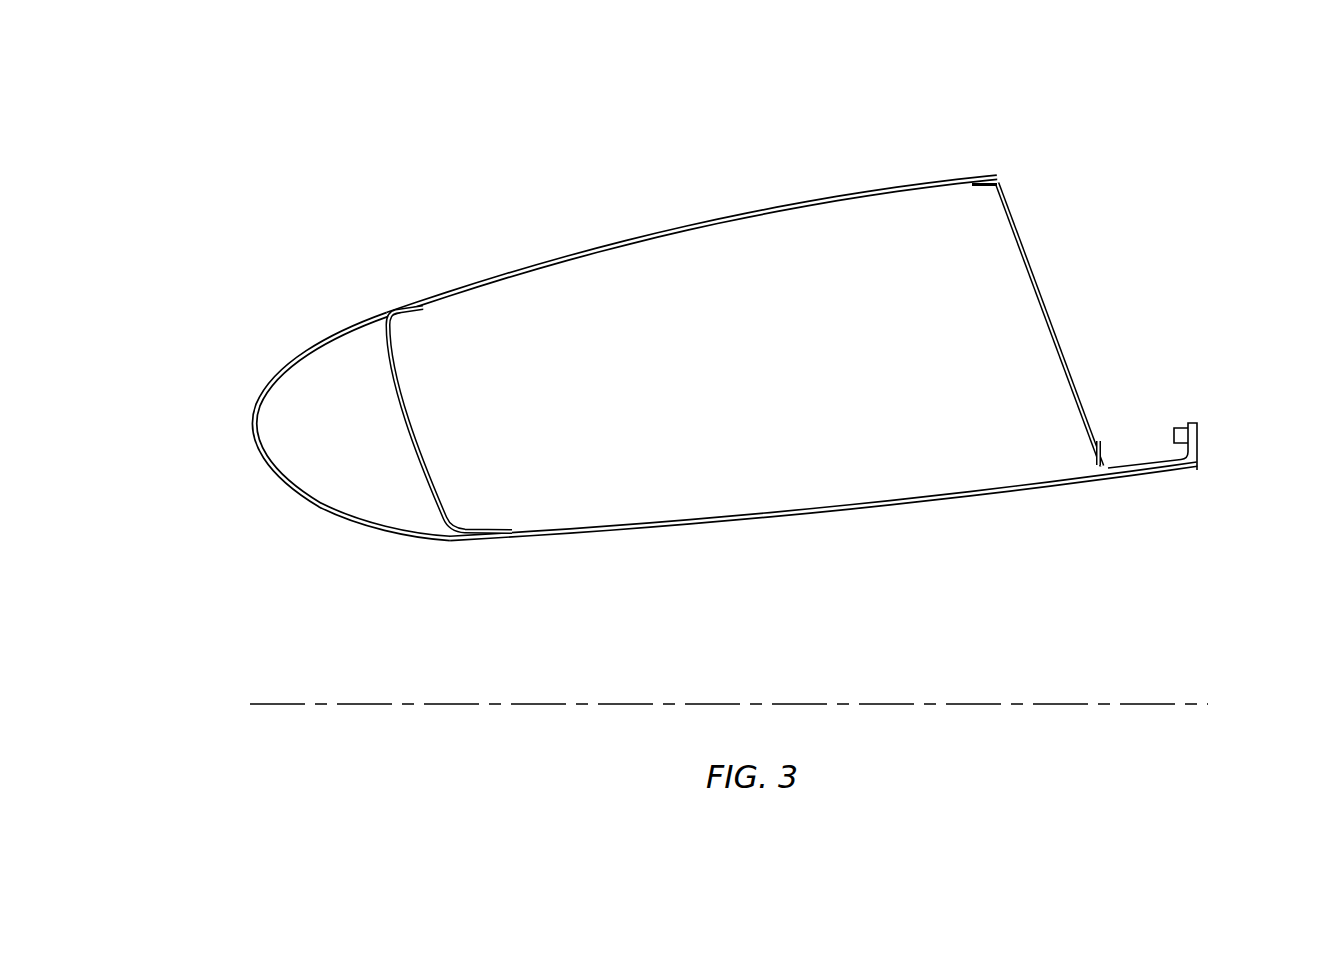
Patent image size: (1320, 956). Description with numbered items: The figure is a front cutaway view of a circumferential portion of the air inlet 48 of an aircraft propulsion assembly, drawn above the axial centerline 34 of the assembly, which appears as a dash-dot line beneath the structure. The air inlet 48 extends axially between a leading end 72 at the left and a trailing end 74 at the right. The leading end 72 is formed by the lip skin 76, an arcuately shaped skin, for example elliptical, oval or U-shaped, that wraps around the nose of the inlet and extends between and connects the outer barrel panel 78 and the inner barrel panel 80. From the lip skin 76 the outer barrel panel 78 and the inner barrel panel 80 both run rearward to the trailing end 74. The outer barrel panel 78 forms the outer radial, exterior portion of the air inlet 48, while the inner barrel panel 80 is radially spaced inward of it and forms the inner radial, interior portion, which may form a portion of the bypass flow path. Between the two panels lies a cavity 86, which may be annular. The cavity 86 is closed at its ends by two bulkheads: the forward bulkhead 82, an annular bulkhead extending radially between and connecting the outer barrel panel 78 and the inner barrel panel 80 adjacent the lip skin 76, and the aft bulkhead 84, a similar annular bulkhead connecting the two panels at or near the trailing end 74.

The axial centerline 34 is at (1192, 703).
The air inlet 48 is at (1102, 143).
The leading end 72 is at (222, 418).
The trailing end 74 is at (1175, 335).
The lip skin 76 is at (302, 355).
The outer barrel panel 78 is at (562, 248).
The inner barrel panel 80 is at (857, 500).
The forward bulkhead 82 is at (422, 467).
The aft bulkhead 84 is at (1040, 298).
The cavity 86 is at (722, 362).